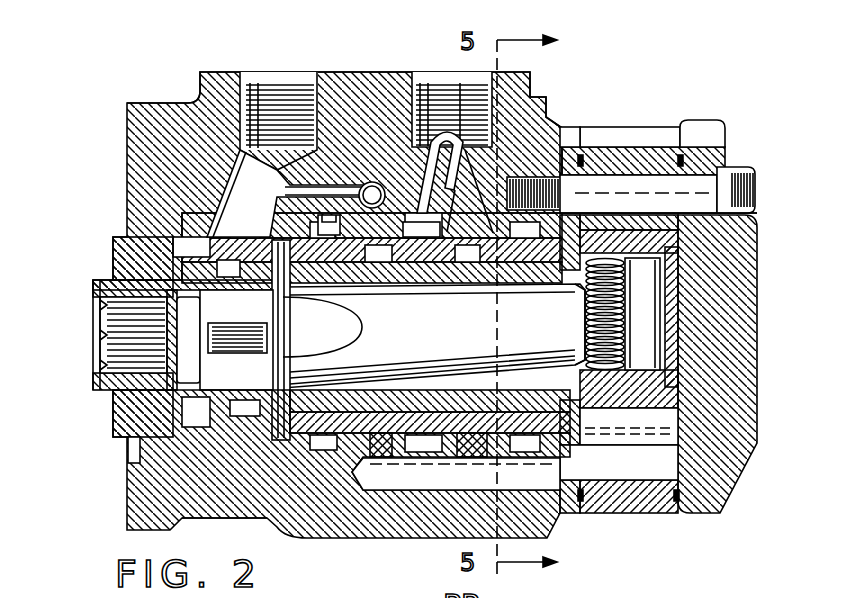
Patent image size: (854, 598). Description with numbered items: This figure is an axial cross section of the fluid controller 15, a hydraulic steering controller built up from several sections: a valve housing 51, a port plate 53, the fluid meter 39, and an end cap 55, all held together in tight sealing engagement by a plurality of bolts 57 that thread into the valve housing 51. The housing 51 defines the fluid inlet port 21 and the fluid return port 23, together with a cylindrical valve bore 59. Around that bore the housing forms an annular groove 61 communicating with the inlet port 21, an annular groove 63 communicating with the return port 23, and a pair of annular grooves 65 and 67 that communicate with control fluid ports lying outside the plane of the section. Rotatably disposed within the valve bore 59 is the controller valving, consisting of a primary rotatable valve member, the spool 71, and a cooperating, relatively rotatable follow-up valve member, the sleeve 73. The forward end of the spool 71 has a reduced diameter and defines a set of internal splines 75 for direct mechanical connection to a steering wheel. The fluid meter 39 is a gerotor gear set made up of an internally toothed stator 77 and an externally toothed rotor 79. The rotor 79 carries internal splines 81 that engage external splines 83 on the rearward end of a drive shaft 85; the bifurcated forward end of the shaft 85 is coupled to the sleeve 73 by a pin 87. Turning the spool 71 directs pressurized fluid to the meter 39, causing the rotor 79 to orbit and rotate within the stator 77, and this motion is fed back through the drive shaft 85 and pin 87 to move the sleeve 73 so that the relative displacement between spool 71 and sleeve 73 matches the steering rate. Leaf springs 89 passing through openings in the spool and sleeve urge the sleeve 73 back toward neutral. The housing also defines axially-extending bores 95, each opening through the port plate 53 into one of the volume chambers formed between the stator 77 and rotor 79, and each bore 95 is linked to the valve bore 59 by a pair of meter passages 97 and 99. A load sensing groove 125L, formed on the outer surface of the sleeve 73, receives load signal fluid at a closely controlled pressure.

The fluid controller 15 is at (100, 100).
The fluid inlet port 21 is at (460, 100).
The fluid return port 23 is at (297, 105).
The fluid meter 39 is at (638, 128).
The valve housing 51 is at (183, 125).
The port plate 53 is at (570, 137).
The end cap 55 is at (700, 133).
The bolts 57 is at (752, 186).
The valve bore 59 is at (220, 430).
The annular groove 61 is at (442, 220).
The annular groove 63 is at (220, 230).
The annular groove 65 is at (318, 226).
The annular groove 67 is at (538, 284).
The spool 71 is at (440, 396).
The sleeve 73 is at (528, 398).
The internal splines 75 is at (120, 337).
The stator 77 is at (632, 496).
The rotor 79 is at (655, 433).
The internal splines 81 is at (665, 268).
The external splines 83 is at (590, 322).
The drive shaft 85 is at (434, 336).
The pin 87 is at (284, 300).
The leaf springs 89 is at (235, 342).
The axially-extending bores 95 is at (527, 466).
The meter passage 97 is at (380, 458).
The meter passage 99 is at (478, 450).
The load sensing groove 125L is at (346, 388).